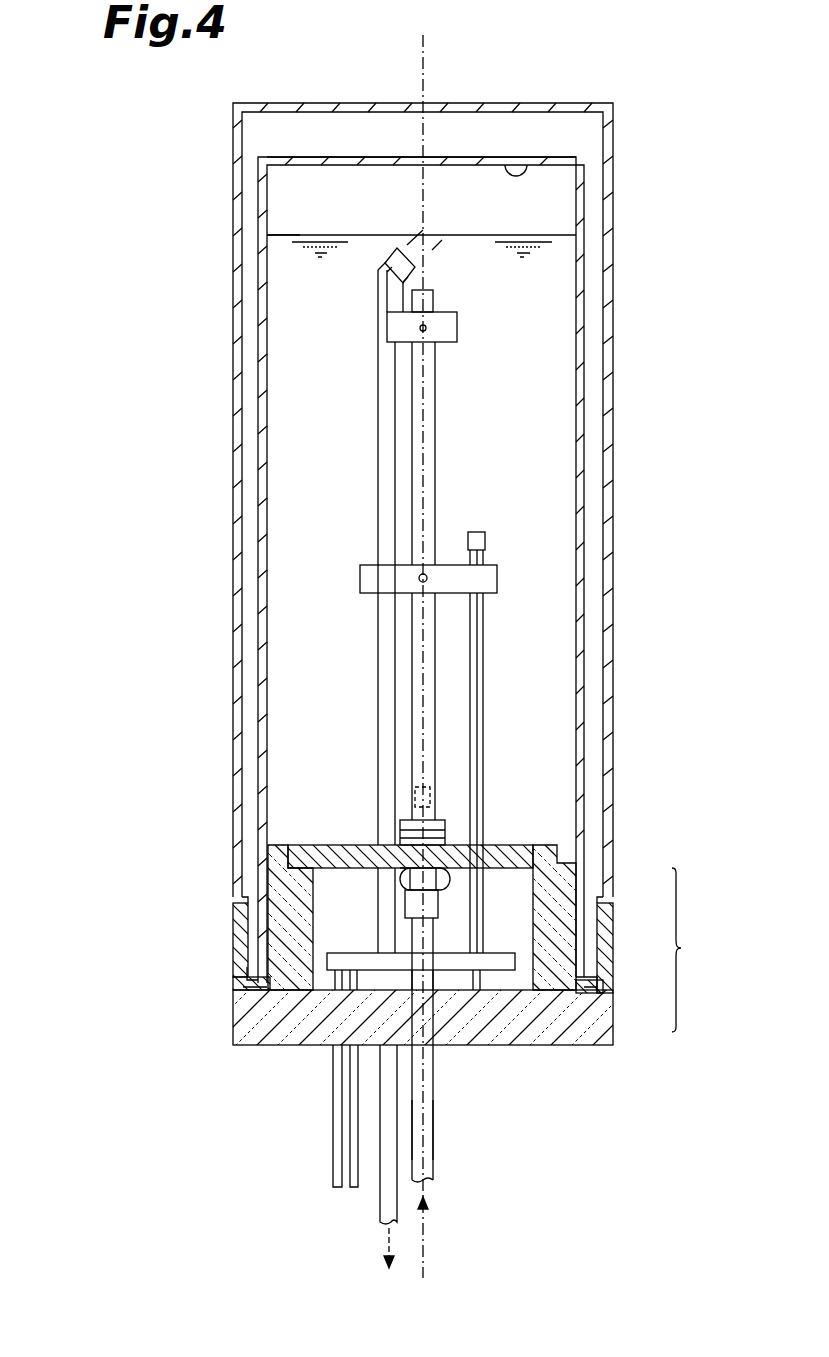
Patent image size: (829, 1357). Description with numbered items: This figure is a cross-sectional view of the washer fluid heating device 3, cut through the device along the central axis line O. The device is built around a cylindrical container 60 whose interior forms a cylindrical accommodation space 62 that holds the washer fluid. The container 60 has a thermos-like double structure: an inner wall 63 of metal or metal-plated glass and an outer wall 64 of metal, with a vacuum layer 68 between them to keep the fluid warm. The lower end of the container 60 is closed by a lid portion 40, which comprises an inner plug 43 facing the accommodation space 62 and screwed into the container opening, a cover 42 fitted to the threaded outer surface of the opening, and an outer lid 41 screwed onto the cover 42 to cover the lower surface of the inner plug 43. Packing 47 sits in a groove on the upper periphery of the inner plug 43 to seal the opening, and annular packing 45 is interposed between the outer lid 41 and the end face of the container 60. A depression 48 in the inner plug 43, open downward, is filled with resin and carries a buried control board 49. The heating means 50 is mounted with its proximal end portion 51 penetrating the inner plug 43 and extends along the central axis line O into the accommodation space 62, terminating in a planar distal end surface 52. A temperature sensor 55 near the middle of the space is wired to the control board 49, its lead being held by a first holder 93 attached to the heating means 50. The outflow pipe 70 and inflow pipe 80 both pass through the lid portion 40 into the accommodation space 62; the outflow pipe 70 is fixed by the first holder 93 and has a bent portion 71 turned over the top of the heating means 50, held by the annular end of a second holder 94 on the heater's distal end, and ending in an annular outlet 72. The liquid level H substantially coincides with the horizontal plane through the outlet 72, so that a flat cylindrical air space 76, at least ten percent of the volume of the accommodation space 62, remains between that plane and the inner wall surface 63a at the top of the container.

The washer fluid heating device 3 is at (715, 160).
The central axis line O is at (420, 52).
The liquid level H is at (283, 236).
The lid portion 40 is at (692, 950).
The outer lid 41 is at (610, 1015).
The cover 42 is at (605, 940).
The inner plug 43 is at (560, 880).
The annular packing 45 is at (240, 985).
The packing 47 is at (560, 850).
The depression 48 is at (330, 960).
The control board 49 is at (348, 952).
The heating means 50 is at (436, 493).
The proximal end portion 51 is at (434, 806).
The distal end surface 52 is at (440, 296).
The temperature sensor 55 is at (486, 540).
The container 60 is at (233, 472).
The accommodation space 62 is at (518, 388).
The inner wall 63 is at (584, 410).
The inner wall surface 63a is at (513, 163).
The outer wall 64 is at (613, 590).
The vacuum layer 68 is at (590, 670).
The outflow pipe 70 is at (380, 390).
The bent portion 71 is at (378, 270).
The outlet 72 is at (430, 237).
The space 76 is at (560, 185).
The inflow pipe 80 is at (436, 1130).
The first holder 93 is at (360, 580).
The second holder 94 is at (387, 328).